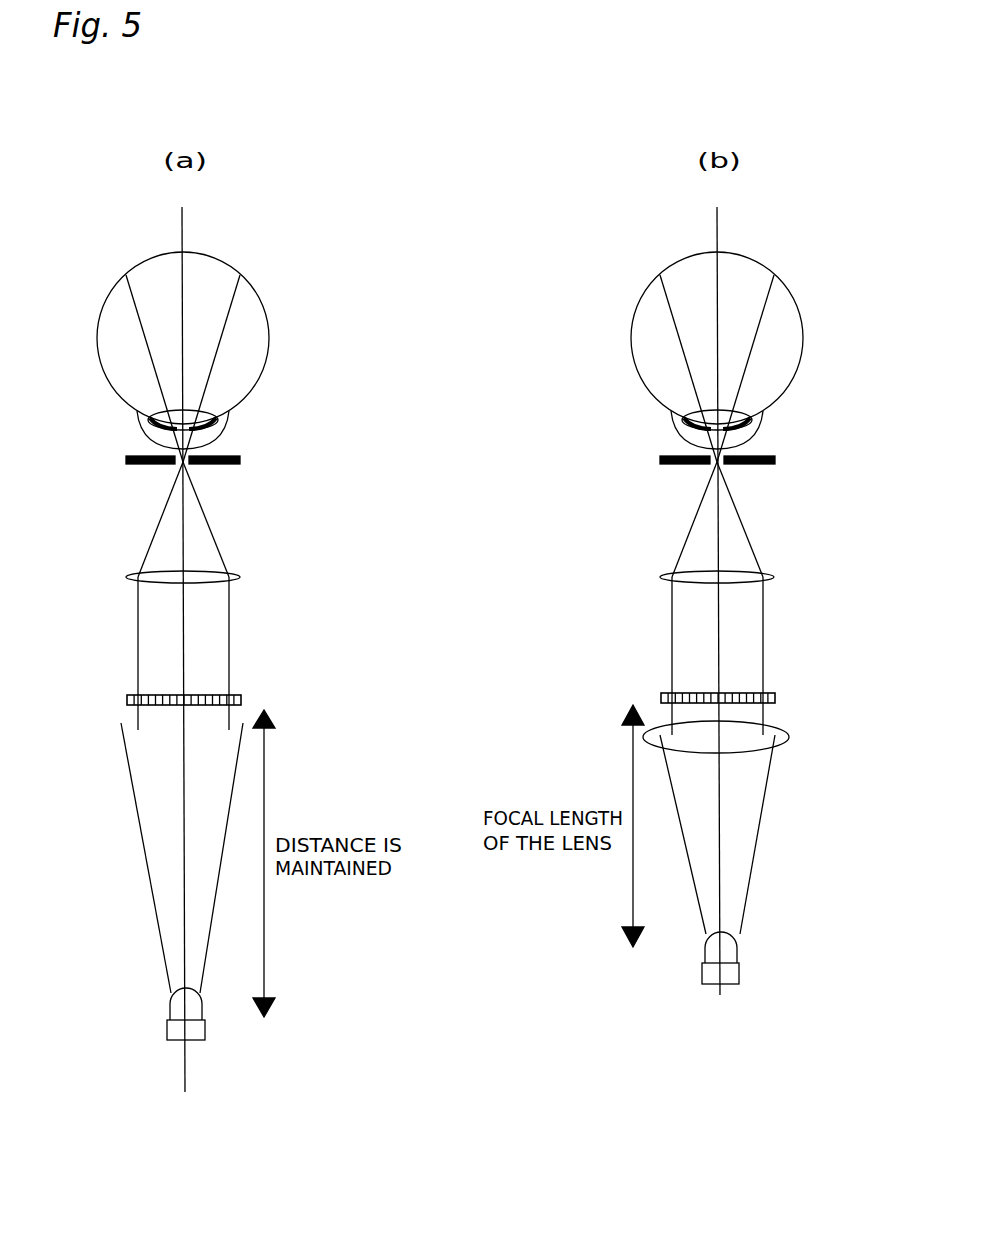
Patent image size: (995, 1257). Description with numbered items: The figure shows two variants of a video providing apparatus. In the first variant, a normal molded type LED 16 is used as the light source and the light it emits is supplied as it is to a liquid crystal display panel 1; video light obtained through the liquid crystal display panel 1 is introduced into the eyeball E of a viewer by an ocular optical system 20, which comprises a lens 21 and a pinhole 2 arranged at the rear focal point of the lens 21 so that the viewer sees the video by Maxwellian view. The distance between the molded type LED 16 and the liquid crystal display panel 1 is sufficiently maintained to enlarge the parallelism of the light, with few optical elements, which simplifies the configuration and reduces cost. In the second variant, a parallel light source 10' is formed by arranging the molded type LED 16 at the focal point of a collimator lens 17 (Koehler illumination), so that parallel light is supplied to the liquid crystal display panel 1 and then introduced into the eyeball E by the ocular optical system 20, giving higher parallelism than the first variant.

The eyeball E is at (268, 340).
The liquid crystal display panel 1 is at (241, 700).
The pinhole 2 is at (240, 460).
The ocular optical system 20 is at (295, 448).
The lens 21 is at (242, 577).
The molded type LED 16 is at (195, 1037).
The collimator lens 17 is at (786, 740).
The parallel light source 10' is at (770, 852).